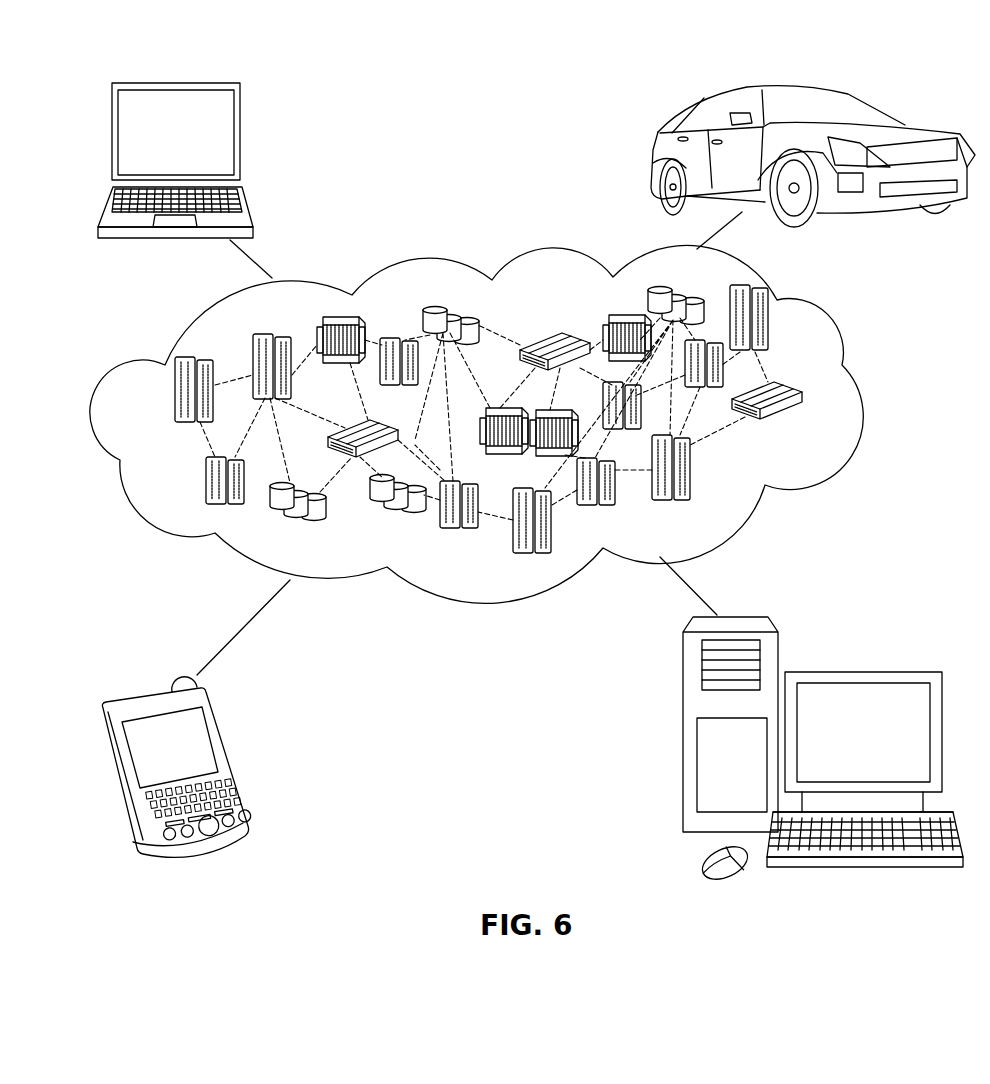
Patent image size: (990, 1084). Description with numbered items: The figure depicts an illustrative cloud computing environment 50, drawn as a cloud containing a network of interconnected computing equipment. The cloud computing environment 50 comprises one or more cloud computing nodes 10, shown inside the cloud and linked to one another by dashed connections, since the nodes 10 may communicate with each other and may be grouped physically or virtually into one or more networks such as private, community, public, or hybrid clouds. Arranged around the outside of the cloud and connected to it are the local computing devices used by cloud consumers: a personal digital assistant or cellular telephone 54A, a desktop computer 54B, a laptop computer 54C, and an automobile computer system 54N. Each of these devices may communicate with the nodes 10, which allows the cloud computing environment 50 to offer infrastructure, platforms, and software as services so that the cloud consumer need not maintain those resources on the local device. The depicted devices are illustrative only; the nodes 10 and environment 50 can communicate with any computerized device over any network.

The cloud computing nodes 10 is at (815, 430).
The cloud computing environment 50 is at (862, 400).
The personal digital assistant or cellular telephone 54A is at (230, 760).
The desktop computer 54B is at (860, 672).
The laptop computer 54C is at (242, 142).
The automobile computer system 54N is at (652, 155).